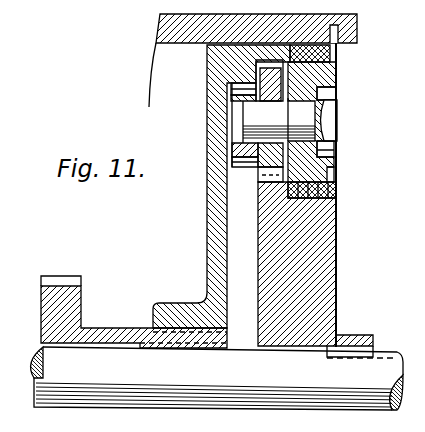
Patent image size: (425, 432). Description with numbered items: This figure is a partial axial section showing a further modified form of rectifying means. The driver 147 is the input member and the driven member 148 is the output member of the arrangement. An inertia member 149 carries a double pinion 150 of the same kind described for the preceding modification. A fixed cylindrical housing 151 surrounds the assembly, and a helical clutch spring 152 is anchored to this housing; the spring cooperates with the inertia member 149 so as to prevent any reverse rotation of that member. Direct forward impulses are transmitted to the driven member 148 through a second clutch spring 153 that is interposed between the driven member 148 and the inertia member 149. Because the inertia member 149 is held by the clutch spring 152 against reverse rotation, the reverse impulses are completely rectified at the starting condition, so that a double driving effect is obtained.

The driver 147 is at (213, 173).
The driven member 148 is at (320, 252).
The inertia member 149 is at (327, 77).
The pinion 150 is at (247, 100).
The fixed cylindrical housing 151 is at (349, 23).
The helical clutch spring 152 is at (333, 53).
The clutch spring 153 is at (339, 188).